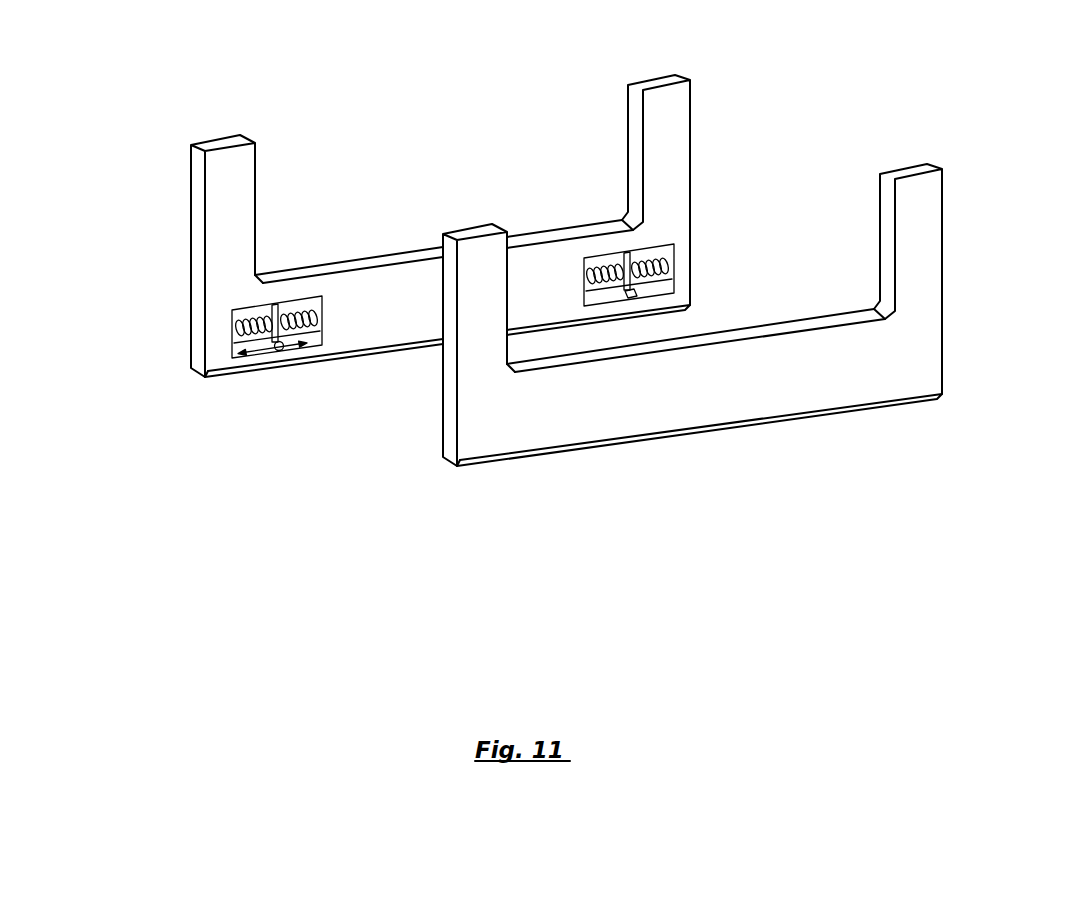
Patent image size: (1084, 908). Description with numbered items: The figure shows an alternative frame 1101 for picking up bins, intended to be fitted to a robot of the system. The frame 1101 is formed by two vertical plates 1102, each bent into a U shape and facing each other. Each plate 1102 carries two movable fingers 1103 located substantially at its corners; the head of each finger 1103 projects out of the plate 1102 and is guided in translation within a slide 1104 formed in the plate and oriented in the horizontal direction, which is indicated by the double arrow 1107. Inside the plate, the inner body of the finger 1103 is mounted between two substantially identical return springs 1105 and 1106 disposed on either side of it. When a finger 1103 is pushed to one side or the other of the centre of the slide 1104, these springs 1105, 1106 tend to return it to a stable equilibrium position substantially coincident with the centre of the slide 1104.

The frame 1101 is at (843, 102).
The vertical plate 1102 is at (228, 202).
The movable finger 1103 is at (280, 307).
The slide 1104 is at (585, 298).
The return spring 1105 is at (237, 353).
The return spring 1106 is at (306, 342).
The double arrow 1107 is at (298, 336).